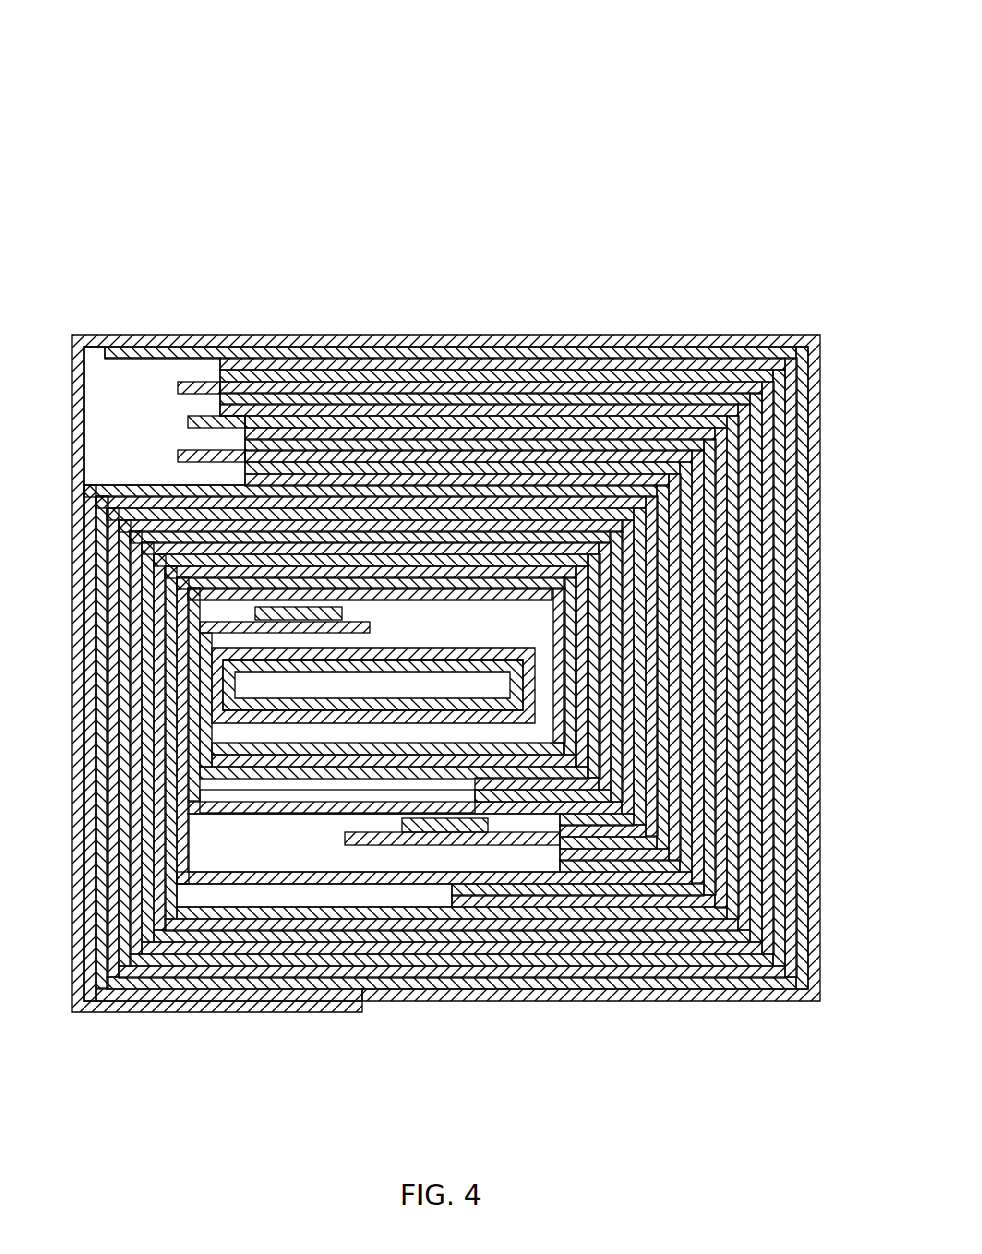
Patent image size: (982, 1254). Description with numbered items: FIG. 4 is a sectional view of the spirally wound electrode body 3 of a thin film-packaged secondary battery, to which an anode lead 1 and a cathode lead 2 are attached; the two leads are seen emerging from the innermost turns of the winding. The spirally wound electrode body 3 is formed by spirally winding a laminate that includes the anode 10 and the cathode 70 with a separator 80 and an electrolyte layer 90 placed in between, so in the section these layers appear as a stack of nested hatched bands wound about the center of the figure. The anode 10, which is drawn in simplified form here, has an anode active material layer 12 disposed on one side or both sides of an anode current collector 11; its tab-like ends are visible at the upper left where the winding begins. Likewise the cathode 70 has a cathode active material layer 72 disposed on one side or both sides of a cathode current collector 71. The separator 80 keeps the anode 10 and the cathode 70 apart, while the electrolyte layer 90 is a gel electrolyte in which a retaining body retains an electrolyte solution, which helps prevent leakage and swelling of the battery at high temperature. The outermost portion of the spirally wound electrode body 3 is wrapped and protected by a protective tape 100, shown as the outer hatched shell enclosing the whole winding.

The anode lead 1 is at (430, 826).
The cathode lead 2 is at (276, 617).
The spirally wound electrode body 3 is at (654, 88).
The anode 10 is at (310, 213).
The anode current collector 11 is at (163, 352).
The anode active material layer 12 is at (290, 480).
The cathode 70 is at (525, 213).
The cathode current collector 71 is at (384, 428).
The cathode active material layer 72 is at (532, 440).
The separator 80 is at (564, 460).
The electrolyte layer 90 is at (668, 468).
The protective tape 100 is at (772, 336).